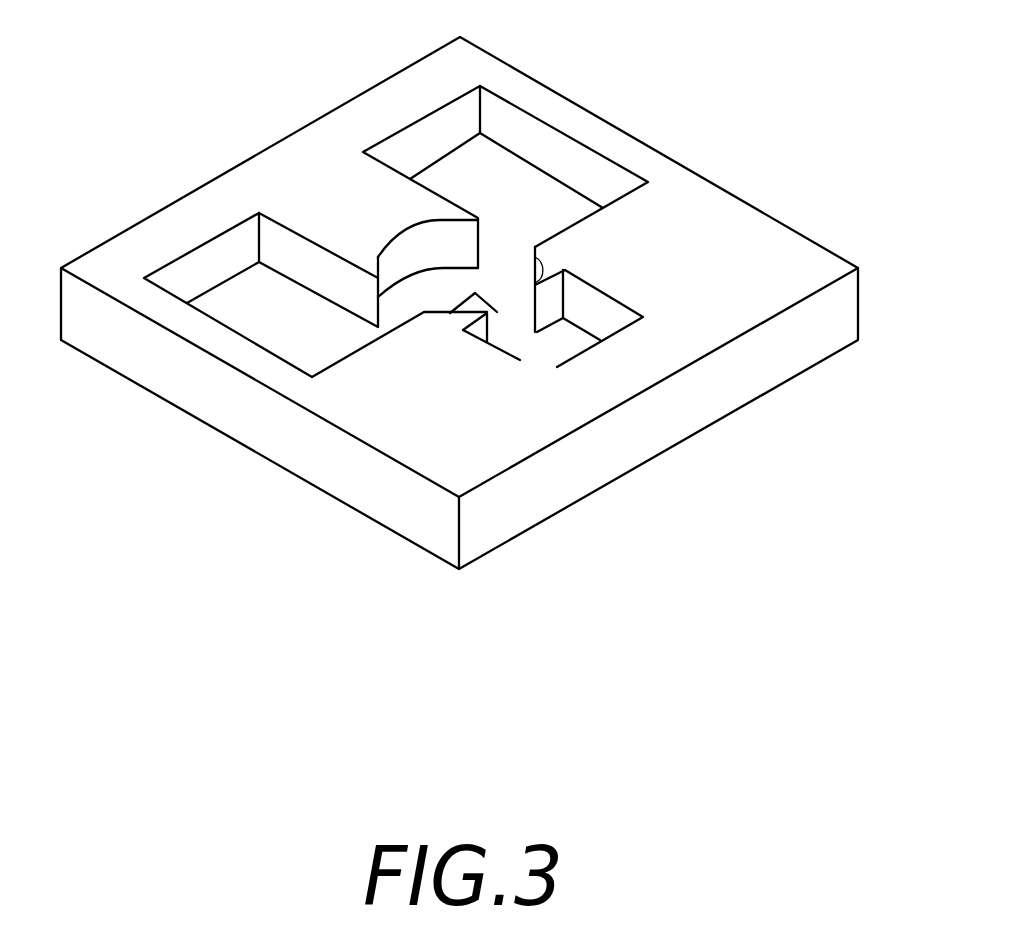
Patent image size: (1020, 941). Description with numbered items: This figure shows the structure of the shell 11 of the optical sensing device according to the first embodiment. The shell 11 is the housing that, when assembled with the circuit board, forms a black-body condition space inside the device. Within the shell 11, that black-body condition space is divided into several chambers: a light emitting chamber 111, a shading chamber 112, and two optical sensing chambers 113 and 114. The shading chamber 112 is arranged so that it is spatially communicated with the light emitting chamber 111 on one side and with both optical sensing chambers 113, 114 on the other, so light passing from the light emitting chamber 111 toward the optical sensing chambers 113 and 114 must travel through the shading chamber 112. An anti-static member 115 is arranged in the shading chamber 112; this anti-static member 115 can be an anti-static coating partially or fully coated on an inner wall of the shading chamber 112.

The shell 11 is at (749, 238).
The light emitting chamber 111 is at (558, 333).
The shading chamber 112 is at (450, 221).
The optical sensing chamber 113 is at (575, 166).
The optical sensing chamber 114 is at (275, 315).
The anti-static member 115 is at (490, 308).